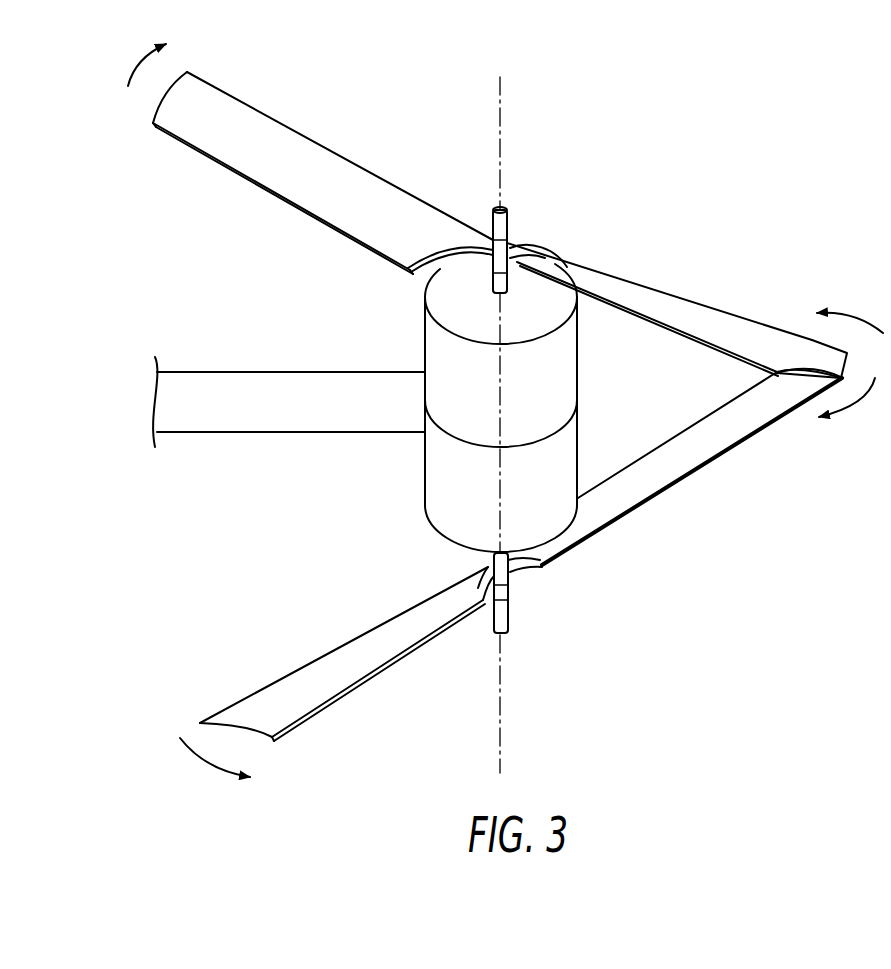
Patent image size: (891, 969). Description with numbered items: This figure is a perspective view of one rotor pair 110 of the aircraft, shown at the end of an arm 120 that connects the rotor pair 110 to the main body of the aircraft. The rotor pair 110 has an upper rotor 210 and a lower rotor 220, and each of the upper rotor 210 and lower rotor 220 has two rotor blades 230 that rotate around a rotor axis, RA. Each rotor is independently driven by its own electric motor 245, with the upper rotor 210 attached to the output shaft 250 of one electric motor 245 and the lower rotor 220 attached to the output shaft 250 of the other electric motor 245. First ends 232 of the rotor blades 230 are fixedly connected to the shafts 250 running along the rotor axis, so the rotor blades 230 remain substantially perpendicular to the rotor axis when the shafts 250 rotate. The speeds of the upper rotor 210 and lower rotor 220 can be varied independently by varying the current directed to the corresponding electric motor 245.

The rotor pair 110 is at (715, 183).
The arm 120 is at (242, 372).
The upper rotor 210 is at (377, 156).
The lower rotor 220 is at (414, 684).
The rotor blade 230 is at (283, 168).
The first end 232 is at (473, 238).
The electric motor 245 is at (458, 362).
The output shaft 250 is at (508, 218).